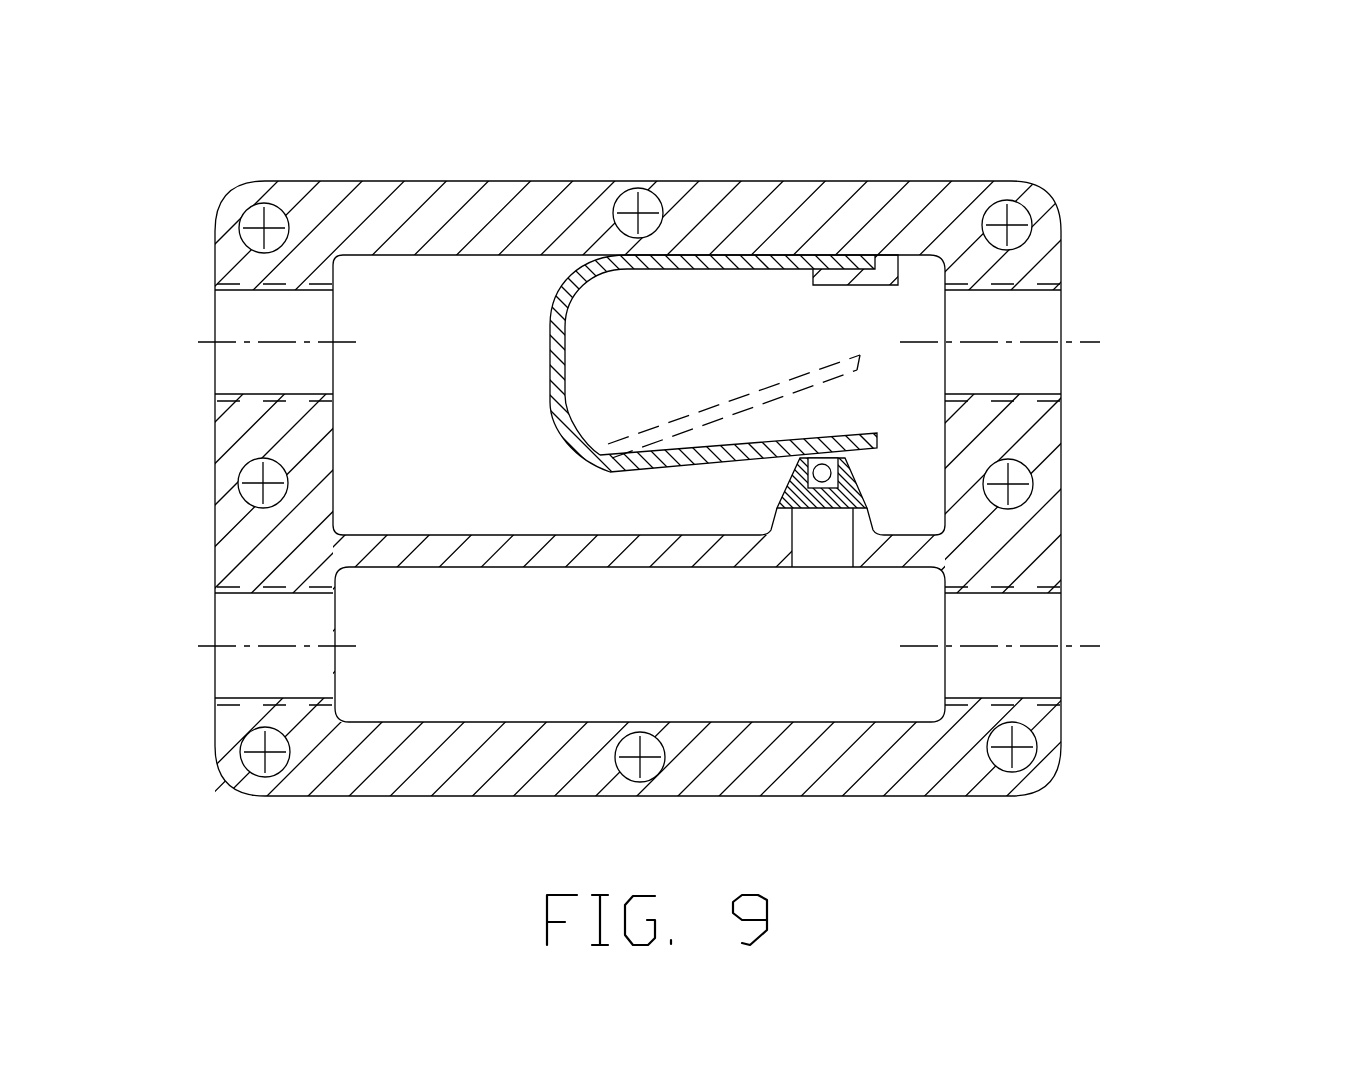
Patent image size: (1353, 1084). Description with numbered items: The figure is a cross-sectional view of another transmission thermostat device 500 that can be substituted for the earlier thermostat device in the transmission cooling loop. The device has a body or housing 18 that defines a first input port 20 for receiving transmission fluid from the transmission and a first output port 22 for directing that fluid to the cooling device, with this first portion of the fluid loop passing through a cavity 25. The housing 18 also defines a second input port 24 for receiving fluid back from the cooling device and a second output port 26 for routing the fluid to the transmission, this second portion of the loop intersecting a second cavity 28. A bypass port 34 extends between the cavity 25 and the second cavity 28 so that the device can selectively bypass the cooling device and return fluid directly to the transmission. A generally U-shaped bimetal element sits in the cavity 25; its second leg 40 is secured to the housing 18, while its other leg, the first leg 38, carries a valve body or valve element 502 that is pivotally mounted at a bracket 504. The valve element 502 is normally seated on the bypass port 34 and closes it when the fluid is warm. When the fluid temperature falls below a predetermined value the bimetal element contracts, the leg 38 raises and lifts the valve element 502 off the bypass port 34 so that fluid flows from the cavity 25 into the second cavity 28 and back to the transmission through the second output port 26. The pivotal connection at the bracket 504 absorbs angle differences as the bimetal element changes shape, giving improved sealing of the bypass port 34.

The thermostat device 500 is at (1137, 205).
The housing 18 is at (1061, 468).
The first input port 20 is at (1034, 393).
The first output port 22 is at (267, 395).
The second input port 24 is at (273, 698).
The second output port 26 is at (1034, 695).
The cavity 25 is at (450, 392).
The second cavity 28 is at (447, 652).
The bypass port 34 is at (848, 543).
The first leg 38 is at (790, 380).
The second leg 40 is at (768, 257).
The valve element 502 is at (782, 496).
The bracket 504 is at (797, 468).